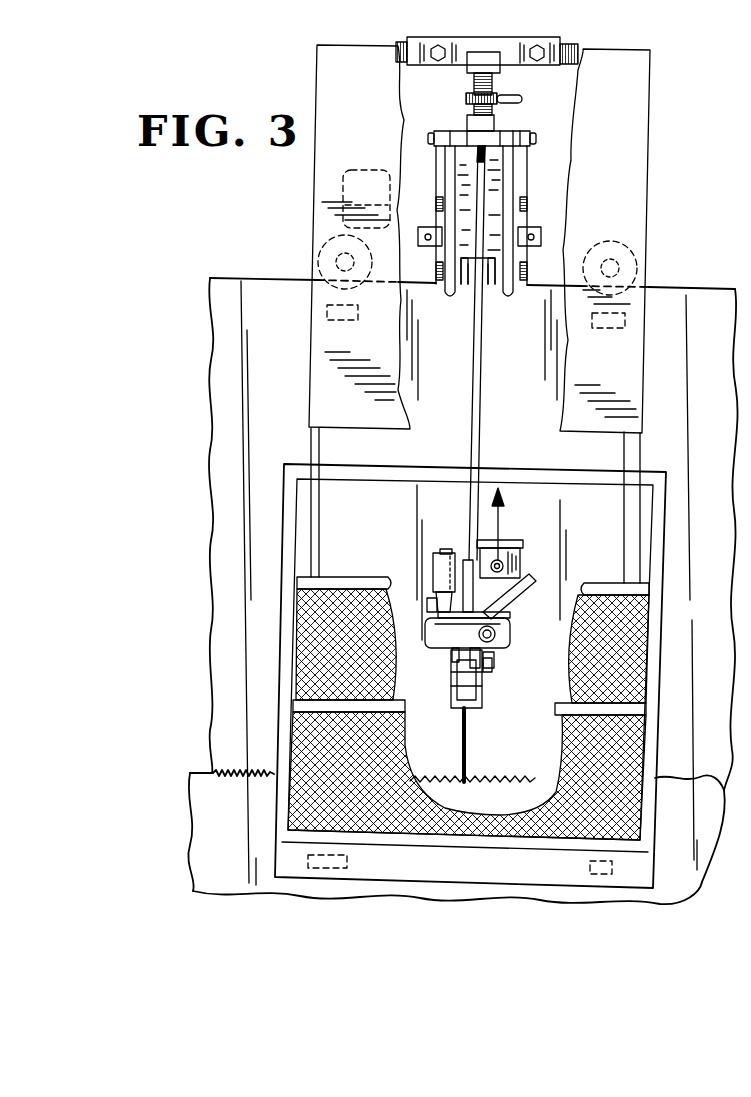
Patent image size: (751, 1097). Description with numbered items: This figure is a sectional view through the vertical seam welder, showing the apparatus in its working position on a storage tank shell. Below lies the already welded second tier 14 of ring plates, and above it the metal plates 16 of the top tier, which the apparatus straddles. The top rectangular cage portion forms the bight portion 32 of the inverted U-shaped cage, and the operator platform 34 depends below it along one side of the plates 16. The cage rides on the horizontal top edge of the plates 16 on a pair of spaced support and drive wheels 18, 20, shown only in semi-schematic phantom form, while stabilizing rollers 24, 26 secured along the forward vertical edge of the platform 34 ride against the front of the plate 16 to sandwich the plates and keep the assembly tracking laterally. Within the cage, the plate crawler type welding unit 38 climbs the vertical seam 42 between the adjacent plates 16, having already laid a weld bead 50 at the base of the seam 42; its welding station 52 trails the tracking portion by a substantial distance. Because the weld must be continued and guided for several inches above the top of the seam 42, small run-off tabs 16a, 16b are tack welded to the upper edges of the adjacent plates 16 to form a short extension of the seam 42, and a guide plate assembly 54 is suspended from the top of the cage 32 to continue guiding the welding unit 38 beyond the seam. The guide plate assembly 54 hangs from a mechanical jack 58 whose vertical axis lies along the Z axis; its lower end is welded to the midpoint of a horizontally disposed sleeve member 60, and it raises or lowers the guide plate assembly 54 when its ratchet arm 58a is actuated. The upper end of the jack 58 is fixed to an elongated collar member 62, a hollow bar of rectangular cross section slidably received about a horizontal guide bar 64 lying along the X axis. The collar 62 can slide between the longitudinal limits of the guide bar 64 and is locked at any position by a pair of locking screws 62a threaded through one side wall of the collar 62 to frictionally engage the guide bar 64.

The second tier 14 is at (205, 818).
The metal plates 16 is at (237, 372).
The run-off tab 16a is at (466, 281).
The run-off tab 16b is at (488, 281).
The support and drive wheel 18 is at (325, 255).
The support and drive wheel 20 is at (640, 266).
The stabilizing roller 24 is at (628, 322).
The stabilizing roller 26 is at (600, 868).
The bight portion 32 is at (648, 48).
The operator platform 34 is at (656, 505).
The welding unit 38 is at (530, 557).
The seam 42 is at (478, 375).
The weld bead 50 is at (469, 746).
The welding station 52 is at (480, 688).
The guide plate assembly 54 is at (534, 182).
The mechanical jack 58 is at (472, 80).
The ratchet arm 58a is at (468, 124).
The sleeve member 60 is at (466, 159).
The collar member 62 is at (522, 98).
The locking screw 62a is at (436, 62).
The guide bar 64 is at (398, 47).